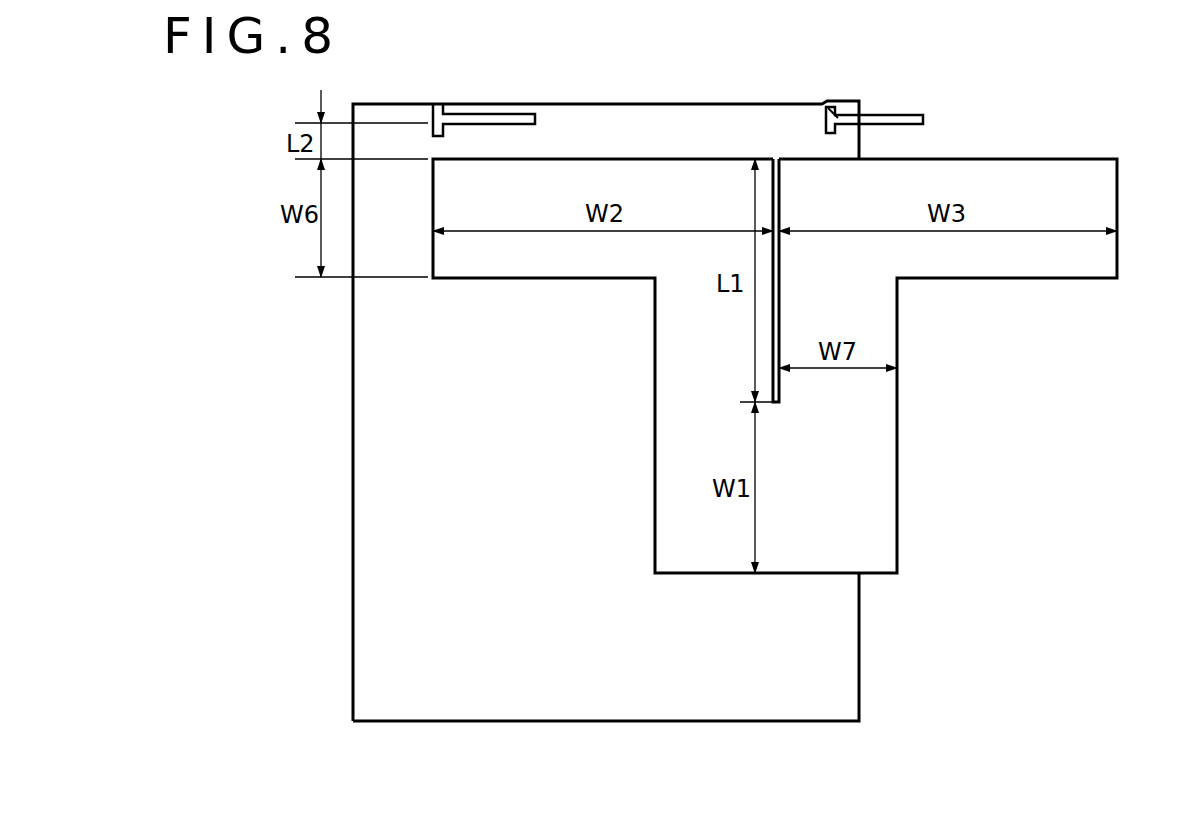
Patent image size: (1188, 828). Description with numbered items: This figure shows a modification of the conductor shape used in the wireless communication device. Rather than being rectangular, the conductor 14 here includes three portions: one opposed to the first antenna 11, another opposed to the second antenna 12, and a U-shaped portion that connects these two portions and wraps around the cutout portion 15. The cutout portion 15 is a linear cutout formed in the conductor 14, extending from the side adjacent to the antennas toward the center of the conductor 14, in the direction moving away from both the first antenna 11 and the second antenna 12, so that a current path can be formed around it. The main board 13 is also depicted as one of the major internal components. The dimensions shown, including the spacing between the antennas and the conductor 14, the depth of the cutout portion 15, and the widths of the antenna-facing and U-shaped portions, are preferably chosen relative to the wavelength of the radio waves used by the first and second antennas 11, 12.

The first antenna 11 is at (483, 112).
The second antenna 12 is at (905, 113).
The main board 13 is at (859, 680).
The conductor 14 is at (1117, 187).
The cutout portion 15 is at (779, 313).